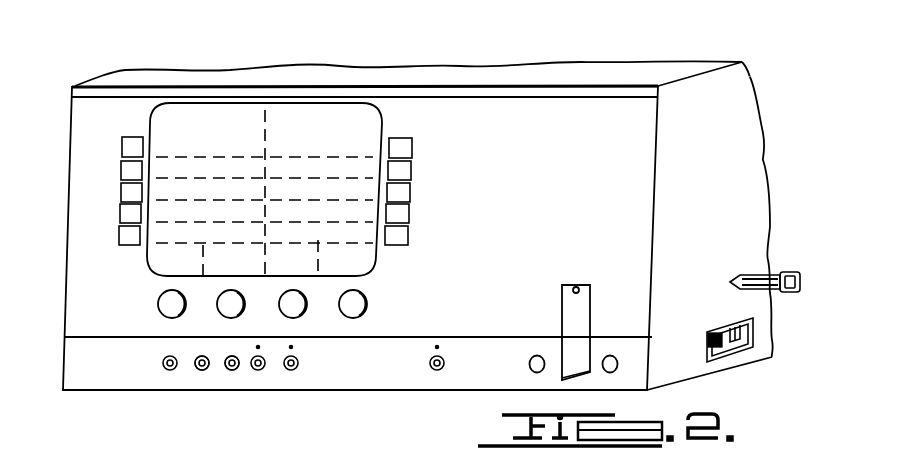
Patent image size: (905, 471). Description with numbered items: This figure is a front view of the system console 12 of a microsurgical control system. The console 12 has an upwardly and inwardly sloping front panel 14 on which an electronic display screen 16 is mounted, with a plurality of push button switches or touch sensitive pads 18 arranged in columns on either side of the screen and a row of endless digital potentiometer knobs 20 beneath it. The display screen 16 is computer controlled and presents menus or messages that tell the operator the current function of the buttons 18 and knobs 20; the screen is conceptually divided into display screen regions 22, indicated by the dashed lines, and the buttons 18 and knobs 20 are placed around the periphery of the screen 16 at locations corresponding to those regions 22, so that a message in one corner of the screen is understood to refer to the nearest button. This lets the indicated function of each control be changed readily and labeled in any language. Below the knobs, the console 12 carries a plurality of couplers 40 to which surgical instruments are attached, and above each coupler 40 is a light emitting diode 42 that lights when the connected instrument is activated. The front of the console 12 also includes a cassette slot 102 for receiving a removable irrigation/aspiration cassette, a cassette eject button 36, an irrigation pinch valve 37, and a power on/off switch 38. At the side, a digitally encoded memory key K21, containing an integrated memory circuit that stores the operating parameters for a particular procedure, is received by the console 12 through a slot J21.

The system console 12 is at (63, 84).
The front panel 14 is at (632, 146).
The electronic display screen 16 is at (375, 105).
The push button switches 18 is at (410, 192).
The digital potentiometer knobs 20 is at (295, 311).
The display screen regions 22 is at (220, 187).
The cassette eject button 36 is at (536, 356).
The irrigation pinch valve 37 is at (610, 356).
The power on/off switch 38 is at (709, 343).
The couplers 40 is at (231, 371).
The light emitting diode 42 is at (233, 347).
The cassette slot 102 is at (577, 287).
The memory key K21 is at (728, 279).
The slot J21 is at (733, 325).